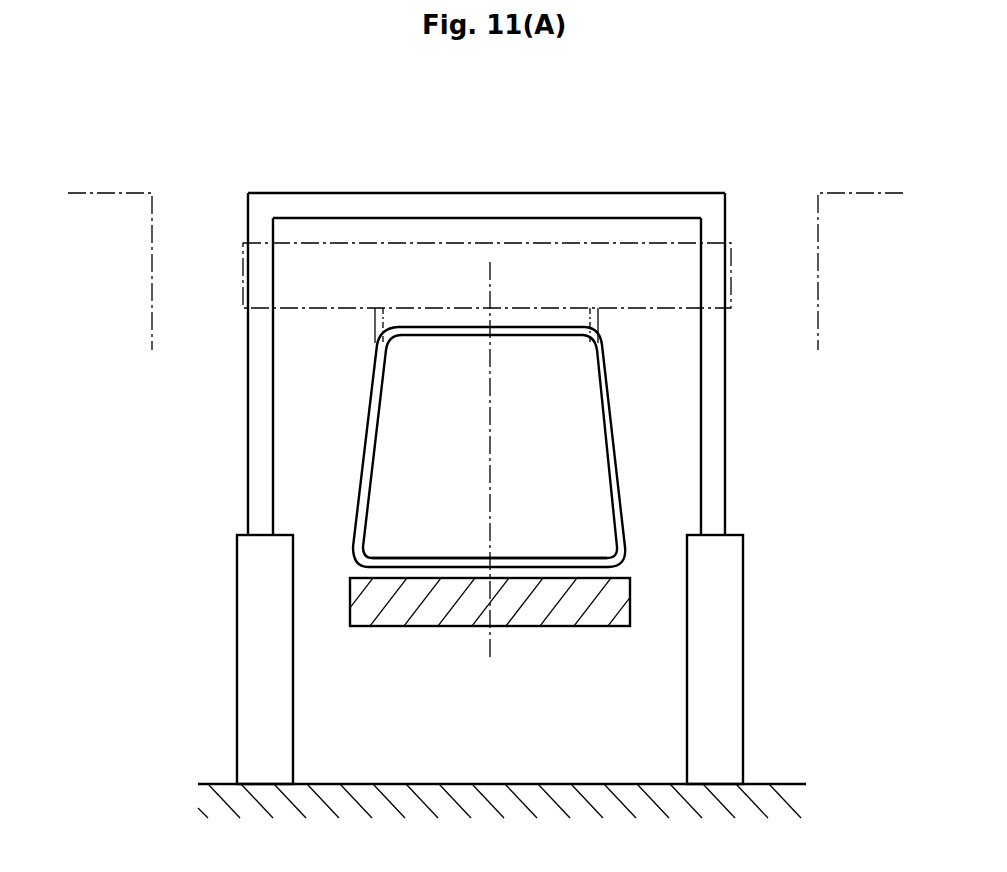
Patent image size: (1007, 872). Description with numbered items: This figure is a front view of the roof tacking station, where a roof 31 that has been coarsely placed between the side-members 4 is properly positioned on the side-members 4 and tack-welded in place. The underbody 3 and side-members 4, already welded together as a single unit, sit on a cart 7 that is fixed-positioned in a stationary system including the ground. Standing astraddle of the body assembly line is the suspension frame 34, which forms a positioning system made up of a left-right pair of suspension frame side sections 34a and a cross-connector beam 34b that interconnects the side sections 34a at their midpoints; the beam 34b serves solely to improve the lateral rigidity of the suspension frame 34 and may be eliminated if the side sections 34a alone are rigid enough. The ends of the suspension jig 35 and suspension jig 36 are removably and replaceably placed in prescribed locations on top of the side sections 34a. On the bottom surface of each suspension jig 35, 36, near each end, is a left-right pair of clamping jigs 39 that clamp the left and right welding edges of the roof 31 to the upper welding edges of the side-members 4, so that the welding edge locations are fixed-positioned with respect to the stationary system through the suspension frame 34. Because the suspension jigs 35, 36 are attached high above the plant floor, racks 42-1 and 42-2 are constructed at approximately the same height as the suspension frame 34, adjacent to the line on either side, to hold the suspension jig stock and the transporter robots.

The underbody 3 is at (516, 562).
The side-members 4 is at (357, 442).
The cart 7 is at (421, 626).
The roof 31 is at (540, 327).
The suspension frame 34 is at (551, 451).
The suspension frame side sections 34a is at (726, 428).
The cross-connector beam 34b is at (590, 193).
The suspension jig 35 is at (487, 220).
The suspension jig 36 is at (393, 243).
The clamping jigs 39 is at (373, 328).
The rack 42-1 is at (146, 192).
The rack 42-2 is at (826, 192).